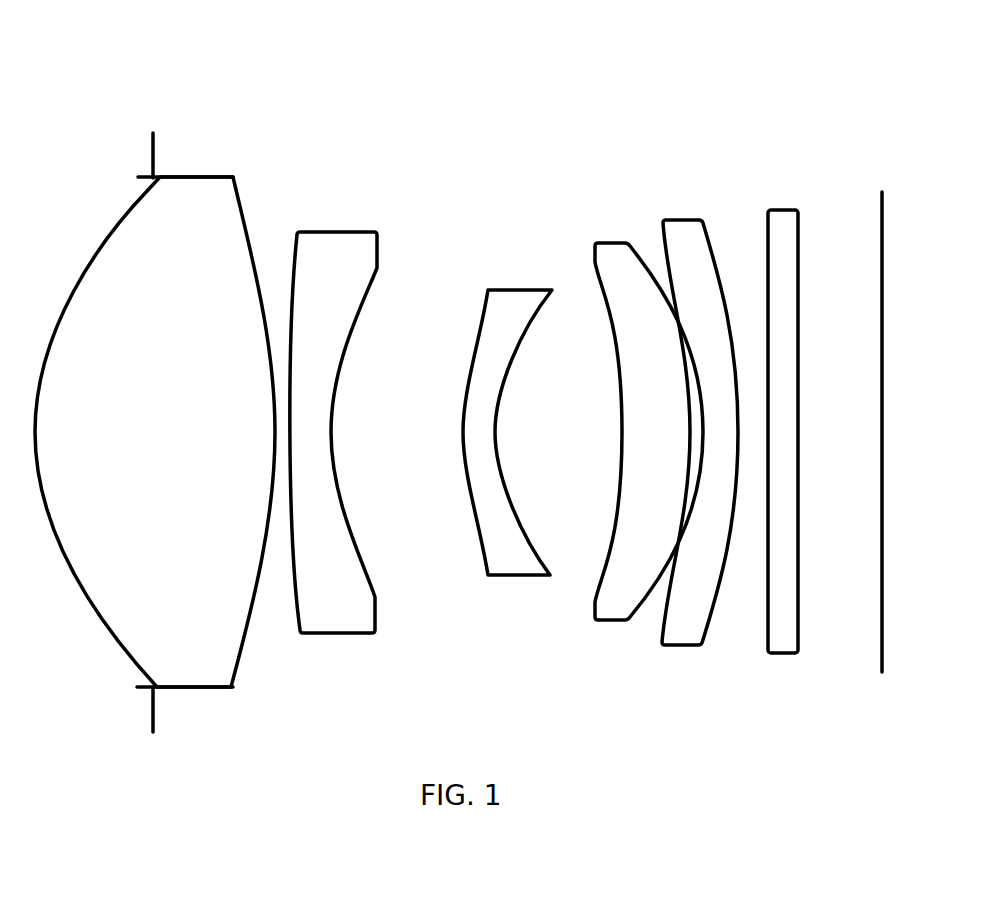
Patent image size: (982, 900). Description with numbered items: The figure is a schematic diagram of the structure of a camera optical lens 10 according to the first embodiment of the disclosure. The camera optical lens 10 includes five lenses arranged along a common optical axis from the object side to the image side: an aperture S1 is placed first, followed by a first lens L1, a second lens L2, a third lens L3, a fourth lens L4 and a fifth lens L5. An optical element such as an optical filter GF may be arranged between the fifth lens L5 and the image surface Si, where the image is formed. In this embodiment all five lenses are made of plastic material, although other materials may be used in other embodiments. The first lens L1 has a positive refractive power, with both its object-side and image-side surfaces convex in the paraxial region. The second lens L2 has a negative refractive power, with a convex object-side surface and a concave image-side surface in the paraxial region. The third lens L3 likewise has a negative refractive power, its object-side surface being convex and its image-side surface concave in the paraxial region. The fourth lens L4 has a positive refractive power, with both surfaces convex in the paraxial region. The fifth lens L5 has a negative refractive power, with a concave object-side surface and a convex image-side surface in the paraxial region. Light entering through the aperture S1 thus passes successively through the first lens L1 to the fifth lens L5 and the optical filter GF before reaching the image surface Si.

The camera optical lens 10 is at (480, 43).
The aperture S1 is at (185, 422).
The first lens L1 is at (155, 419).
The second lens L2 is at (333, 418).
The third lens L3 is at (507, 419).
The fourth lens L4 is at (649, 419).
The fifth lens L5 is at (700, 421).
The optical filter GF is at (784, 418).
The image surface Si is at (884, 419).